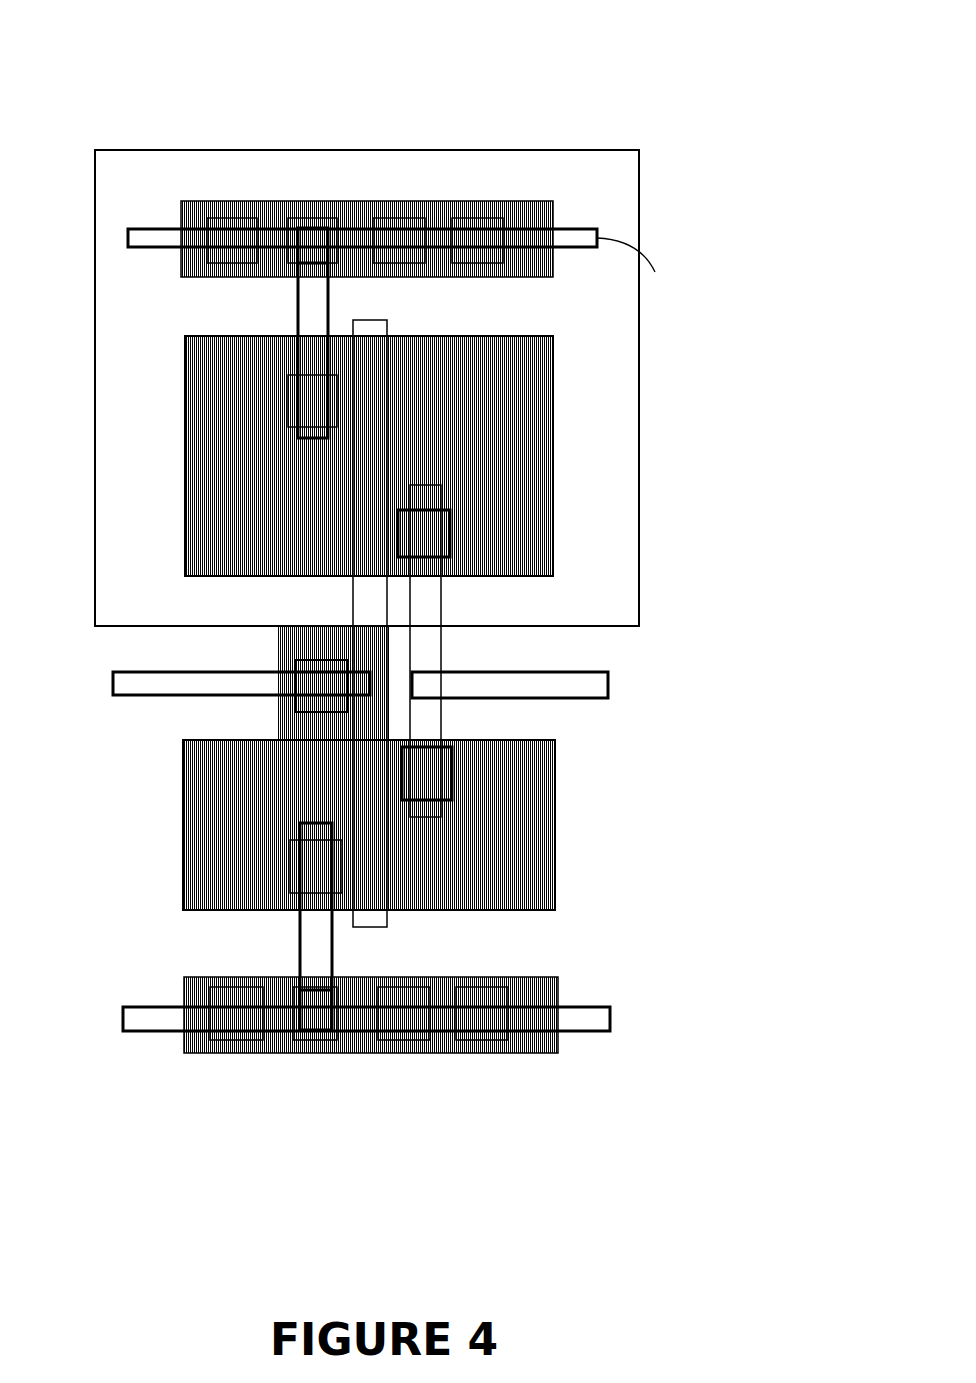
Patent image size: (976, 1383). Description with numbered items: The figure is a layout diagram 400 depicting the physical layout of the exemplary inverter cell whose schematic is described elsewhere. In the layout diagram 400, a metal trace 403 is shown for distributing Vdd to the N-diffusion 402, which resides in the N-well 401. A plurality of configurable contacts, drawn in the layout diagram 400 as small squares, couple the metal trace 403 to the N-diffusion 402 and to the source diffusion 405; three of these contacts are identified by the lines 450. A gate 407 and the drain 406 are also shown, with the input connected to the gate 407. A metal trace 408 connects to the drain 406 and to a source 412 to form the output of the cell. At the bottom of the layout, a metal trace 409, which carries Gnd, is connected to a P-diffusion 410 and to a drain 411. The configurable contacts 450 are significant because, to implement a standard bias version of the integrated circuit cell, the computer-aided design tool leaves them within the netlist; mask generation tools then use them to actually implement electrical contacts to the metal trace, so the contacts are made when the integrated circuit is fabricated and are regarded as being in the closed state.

The layout diagram 400 is at (78, 26).
The N-well 401 is at (590, 177).
The N-diffusion 402 is at (478, 202).
The metal trace 403 is at (445, 454).
The source diffusion 405 is at (243, 369).
The drain 406 is at (532, 369).
The gate 407 is at (368, 432).
The metal trace 408 is at (608, 680).
The metal trace 409 is at (610, 1010).
The P-diffusion 410 is at (553, 1053).
The drain 411 is at (243, 897).
The source 412 is at (538, 897).
The configurable contacts 450 is at (387, 207).